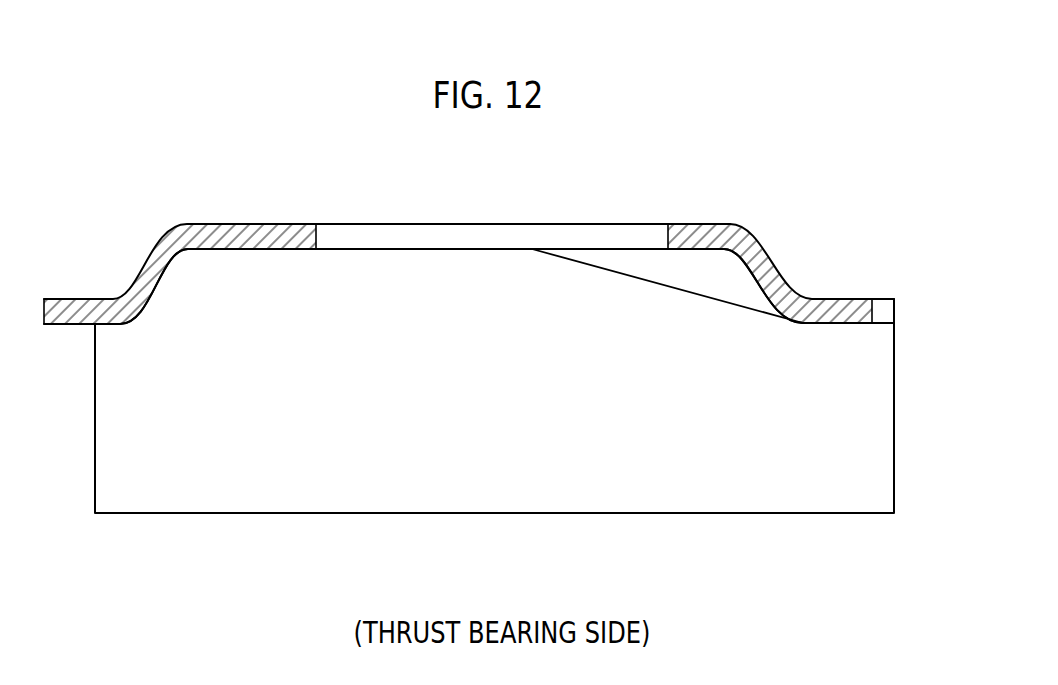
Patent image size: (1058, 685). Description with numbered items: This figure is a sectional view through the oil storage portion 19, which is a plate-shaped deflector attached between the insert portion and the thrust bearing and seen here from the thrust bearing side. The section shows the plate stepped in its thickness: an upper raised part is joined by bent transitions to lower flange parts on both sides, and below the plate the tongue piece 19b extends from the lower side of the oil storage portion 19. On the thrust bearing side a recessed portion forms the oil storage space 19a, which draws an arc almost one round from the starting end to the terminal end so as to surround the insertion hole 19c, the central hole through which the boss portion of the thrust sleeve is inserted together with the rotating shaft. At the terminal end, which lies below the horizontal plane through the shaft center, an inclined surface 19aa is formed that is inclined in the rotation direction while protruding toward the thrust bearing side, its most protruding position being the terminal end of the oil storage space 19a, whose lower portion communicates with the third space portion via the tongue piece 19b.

The oil storage portion 19 is at (882, 298).
The oil storage space 19a is at (200, 253).
The inclined surface 19aa is at (718, 300).
The tongue piece 19b is at (867, 458).
The insertion hole 19c is at (668, 240).